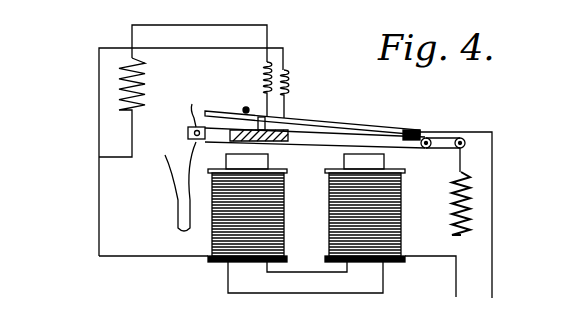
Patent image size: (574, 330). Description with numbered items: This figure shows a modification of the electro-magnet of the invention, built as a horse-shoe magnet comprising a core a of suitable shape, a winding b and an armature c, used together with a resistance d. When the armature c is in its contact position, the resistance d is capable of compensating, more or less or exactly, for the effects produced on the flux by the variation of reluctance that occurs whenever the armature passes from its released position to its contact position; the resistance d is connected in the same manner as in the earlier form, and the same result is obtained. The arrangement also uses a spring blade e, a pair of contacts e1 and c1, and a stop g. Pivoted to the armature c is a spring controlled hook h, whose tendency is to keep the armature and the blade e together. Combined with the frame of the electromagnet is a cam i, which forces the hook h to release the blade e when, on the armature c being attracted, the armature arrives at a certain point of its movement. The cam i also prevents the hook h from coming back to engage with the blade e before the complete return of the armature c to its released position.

The core a is at (333, 283).
The winding b is at (340, 233).
The armature c is at (365, 140).
The contact c1 is at (246, 108).
The resistance d is at (124, 90).
The spring blade e is at (352, 128).
The contact e1 is at (272, 118).
The stop g is at (265, 52).
The spring controlled hook h is at (190, 122).
The cam i is at (180, 207).